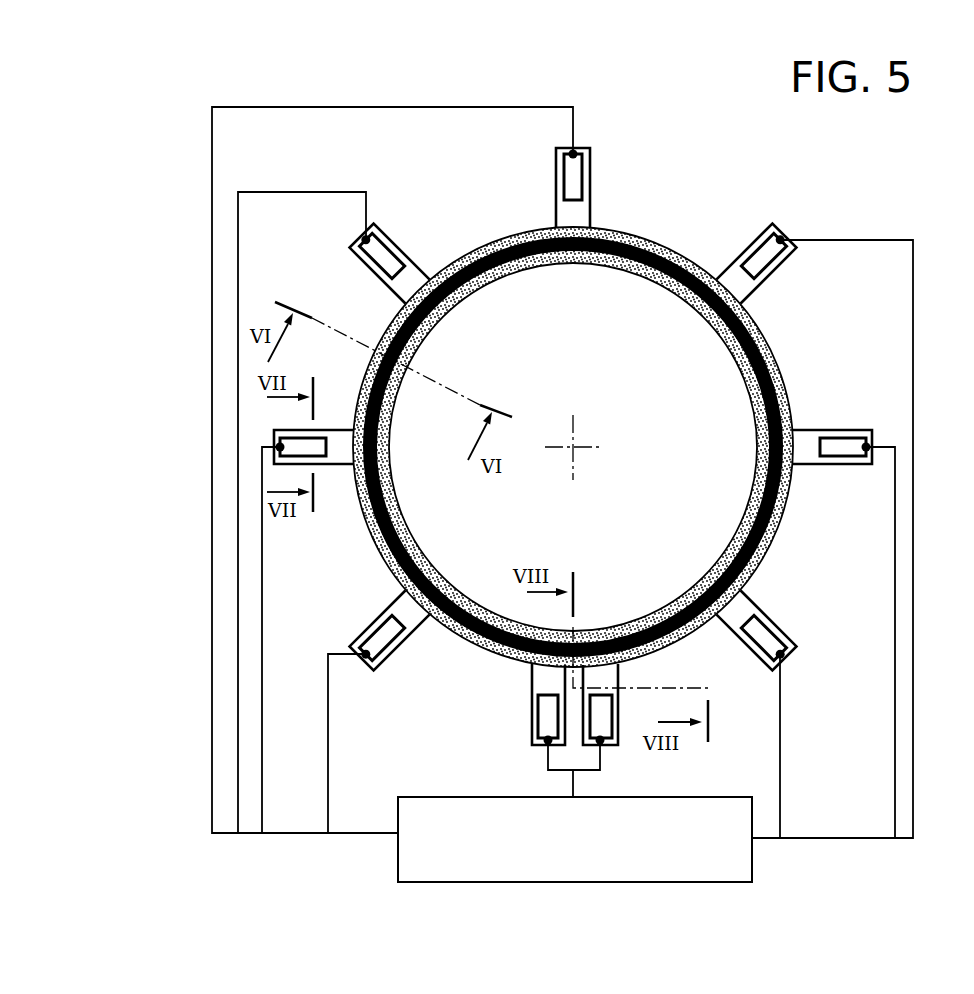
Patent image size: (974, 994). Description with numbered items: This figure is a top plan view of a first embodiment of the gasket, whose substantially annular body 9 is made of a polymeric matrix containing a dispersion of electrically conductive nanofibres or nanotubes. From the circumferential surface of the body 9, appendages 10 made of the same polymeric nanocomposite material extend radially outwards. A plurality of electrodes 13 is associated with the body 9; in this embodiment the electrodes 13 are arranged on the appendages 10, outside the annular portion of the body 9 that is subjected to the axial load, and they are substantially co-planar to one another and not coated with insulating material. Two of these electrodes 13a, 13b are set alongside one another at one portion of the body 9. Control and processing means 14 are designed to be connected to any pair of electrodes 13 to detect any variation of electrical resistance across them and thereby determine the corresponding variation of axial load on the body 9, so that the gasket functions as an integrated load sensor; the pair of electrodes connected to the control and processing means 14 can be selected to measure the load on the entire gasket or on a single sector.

The body 9 is at (635, 232).
The appendages 10 is at (408, 277).
The electrodes 13 is at (763, 267).
The electrode 13a is at (543, 713).
The electrode 13b is at (598, 722).
The control and processing means 14 is at (752, 868).